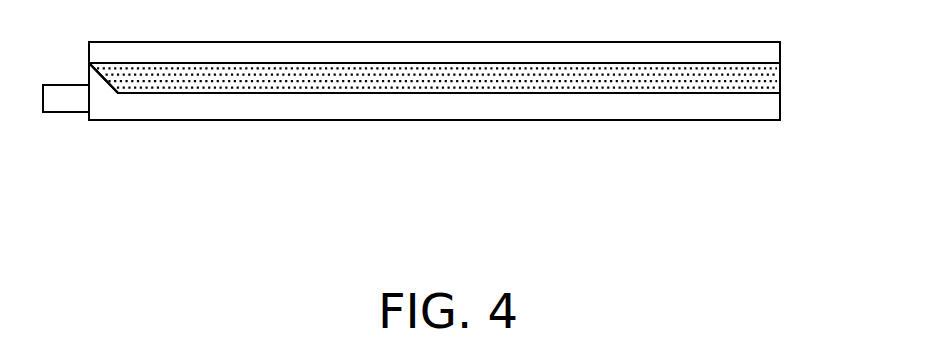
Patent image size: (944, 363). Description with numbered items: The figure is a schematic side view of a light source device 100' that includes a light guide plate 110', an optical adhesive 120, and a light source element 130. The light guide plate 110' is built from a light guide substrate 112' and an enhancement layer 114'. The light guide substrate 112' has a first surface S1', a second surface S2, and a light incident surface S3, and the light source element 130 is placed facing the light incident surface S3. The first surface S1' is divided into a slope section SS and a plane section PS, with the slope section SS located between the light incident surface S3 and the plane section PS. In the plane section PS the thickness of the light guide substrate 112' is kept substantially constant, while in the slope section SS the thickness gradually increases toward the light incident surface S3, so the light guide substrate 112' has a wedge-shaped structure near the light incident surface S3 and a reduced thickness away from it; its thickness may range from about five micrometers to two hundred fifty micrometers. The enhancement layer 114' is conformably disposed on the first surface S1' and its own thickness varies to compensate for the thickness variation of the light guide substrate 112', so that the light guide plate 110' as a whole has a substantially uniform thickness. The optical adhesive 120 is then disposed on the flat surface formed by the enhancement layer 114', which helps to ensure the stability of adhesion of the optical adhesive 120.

The light source device 100' is at (471, 130).
The light guide plate 110' is at (490, 94).
The light guide substrate 112' is at (463, 97).
The enhancement layer 114' is at (463, 75).
The optical adhesive 120 is at (772, 50).
The light source element 130 is at (66, 92).
The first surface S1' is at (151, 227).
The second surface S2 is at (379, 119).
The light incident surface S3 is at (88, 98).
The slope section SS is at (112, 85).
The plane section PS is at (170, 93).